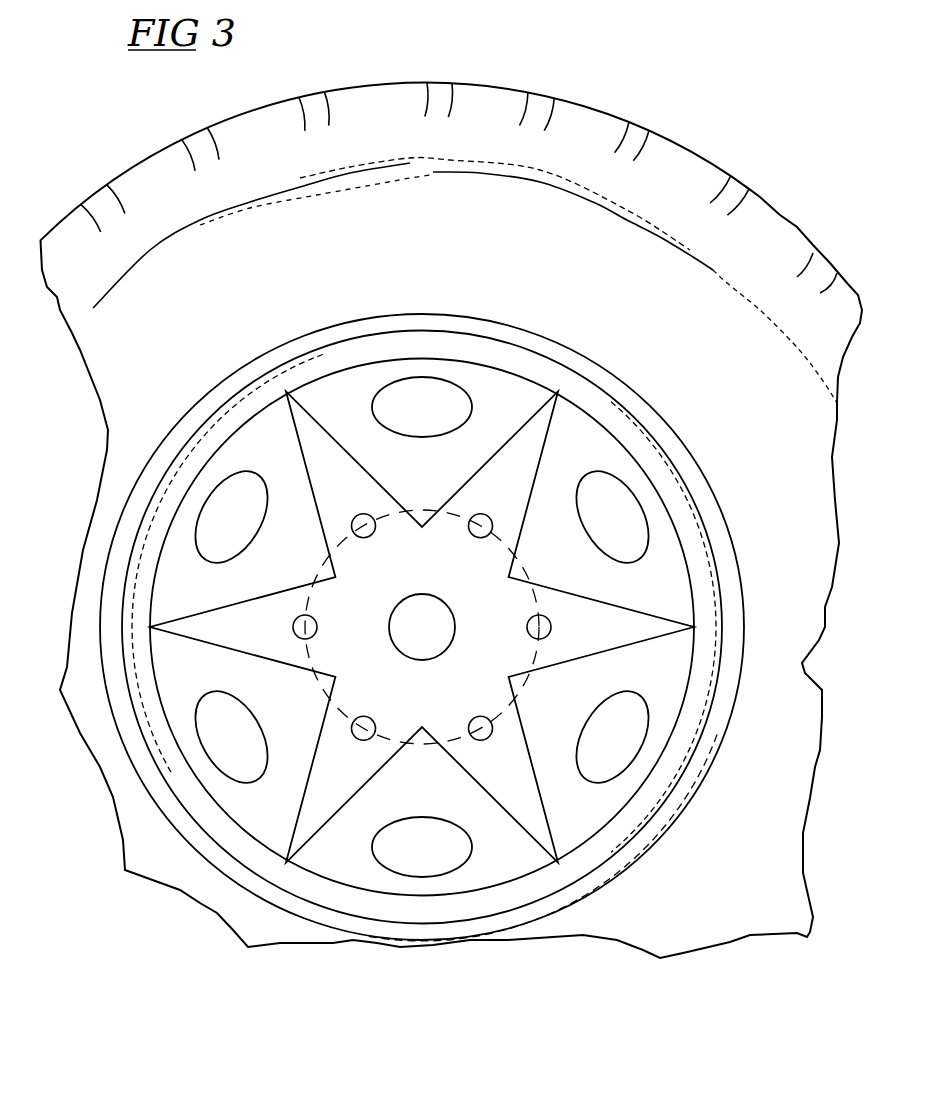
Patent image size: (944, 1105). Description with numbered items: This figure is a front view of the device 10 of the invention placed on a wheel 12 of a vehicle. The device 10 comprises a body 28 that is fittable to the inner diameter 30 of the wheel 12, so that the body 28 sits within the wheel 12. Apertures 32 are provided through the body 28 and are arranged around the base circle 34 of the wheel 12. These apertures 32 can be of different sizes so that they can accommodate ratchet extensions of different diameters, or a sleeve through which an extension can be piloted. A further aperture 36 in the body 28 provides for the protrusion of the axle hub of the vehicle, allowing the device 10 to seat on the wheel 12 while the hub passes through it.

The device 10 is at (506, 497).
The wheel 12 is at (267, 822).
The body 28 is at (245, 613).
The inner diameter 30 is at (338, 372).
The apertures 32 is at (487, 733).
The base circle 34 is at (420, 730).
The aperture 36 is at (396, 633).